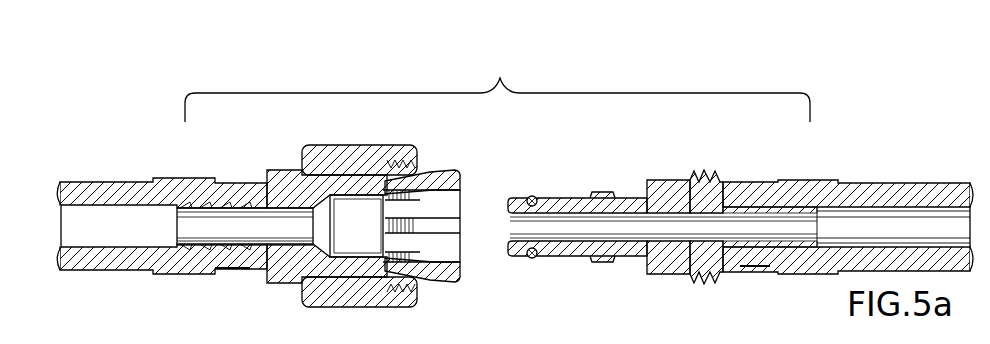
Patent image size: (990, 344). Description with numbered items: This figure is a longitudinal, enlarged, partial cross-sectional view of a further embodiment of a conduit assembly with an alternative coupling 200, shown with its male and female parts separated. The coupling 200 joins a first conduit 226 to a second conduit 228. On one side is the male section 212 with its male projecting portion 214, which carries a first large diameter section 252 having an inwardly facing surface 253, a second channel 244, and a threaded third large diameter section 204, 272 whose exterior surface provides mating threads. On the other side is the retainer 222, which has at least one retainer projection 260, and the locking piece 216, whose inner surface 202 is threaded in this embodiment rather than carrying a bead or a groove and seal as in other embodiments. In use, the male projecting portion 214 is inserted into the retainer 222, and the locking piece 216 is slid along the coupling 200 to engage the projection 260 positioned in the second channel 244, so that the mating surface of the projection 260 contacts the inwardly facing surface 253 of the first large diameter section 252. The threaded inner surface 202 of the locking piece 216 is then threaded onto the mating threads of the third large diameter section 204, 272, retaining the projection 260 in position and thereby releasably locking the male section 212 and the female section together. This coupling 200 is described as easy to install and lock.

The coupling 200 is at (497, 89).
The inner surface of the locking piece 202 is at (413, 162).
The third large diameter section 204 is at (706, 176).
The male section 212 is at (656, 180).
The male projecting portion 214 is at (556, 198).
The locking piece 216 is at (350, 147).
The retainer 222 is at (421, 282).
The first conduit 226 is at (853, 183).
The second conduit 228 is at (138, 182).
The second channel 244 is at (634, 268).
The first large diameter section 252 is at (600, 263).
The inwardly facing surface 253 is at (612, 192).
The retainer projection 260 is at (447, 164).
The third large diameter section 272 is at (724, 284).